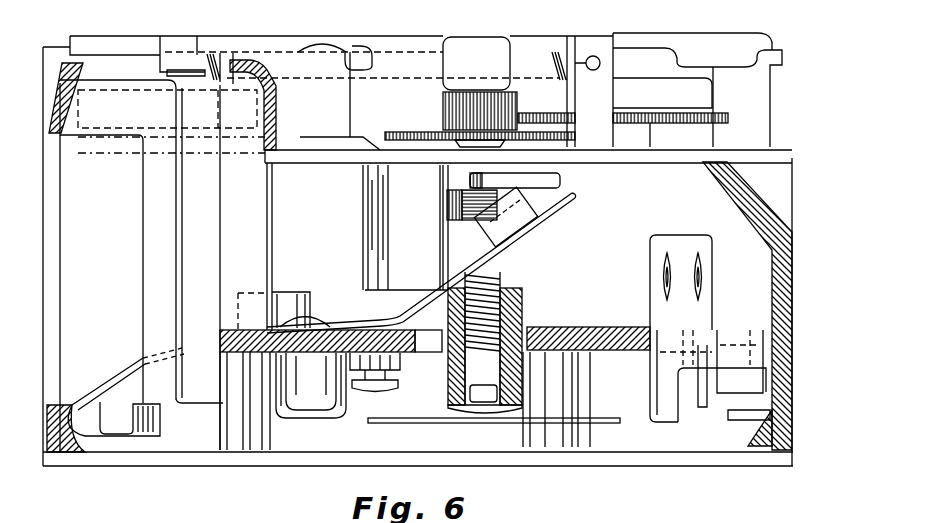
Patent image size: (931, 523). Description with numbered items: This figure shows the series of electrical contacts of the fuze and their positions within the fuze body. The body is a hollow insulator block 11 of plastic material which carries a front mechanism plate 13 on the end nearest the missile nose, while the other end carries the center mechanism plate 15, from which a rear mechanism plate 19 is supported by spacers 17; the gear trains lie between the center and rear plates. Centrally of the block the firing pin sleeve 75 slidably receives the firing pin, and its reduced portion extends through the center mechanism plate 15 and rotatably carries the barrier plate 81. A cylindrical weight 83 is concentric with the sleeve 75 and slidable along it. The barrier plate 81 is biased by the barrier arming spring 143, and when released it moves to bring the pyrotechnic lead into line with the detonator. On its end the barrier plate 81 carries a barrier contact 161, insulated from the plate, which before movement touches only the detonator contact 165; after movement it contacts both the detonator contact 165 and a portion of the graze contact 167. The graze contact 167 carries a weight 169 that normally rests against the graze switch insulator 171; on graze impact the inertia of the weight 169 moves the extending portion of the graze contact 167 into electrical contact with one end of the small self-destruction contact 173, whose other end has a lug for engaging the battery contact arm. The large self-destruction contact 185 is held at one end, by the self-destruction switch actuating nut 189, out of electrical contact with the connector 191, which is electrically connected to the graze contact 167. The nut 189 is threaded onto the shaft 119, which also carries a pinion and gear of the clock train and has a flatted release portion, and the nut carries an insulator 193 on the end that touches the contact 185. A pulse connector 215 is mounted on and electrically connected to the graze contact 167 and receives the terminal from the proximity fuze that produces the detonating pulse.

The insulator block 11 is at (53, 294).
The front mechanism plate 13 is at (602, 458).
The center mechanism plate 15 is at (640, 160).
The spacers 17 is at (342, 105).
The rear mechanism plate 19 is at (632, 45).
The firing pin sleeve 75 is at (372, 222).
The barrier plate 81 is at (124, 44).
The cylindrical weight 83 is at (325, 297).
The shaft 119 is at (462, 200).
The barrier arming spring 143 is at (528, 68).
The barrier contact 161 is at (197, 118).
The detonator contact 165 is at (152, 252).
The graze contact 167 is at (248, 223).
The weight 169 is at (527, 212).
The graze switch insulator 171 is at (548, 176).
The small self-destruction contact 173 is at (604, 306).
The large self-destruction contact 185 is at (651, 371).
The self-destruction switch actuating nut 189 is at (447, 380).
The connector 191 is at (395, 392).
The insulator 193 is at (482, 416).
The pulse connector 215 is at (313, 397).